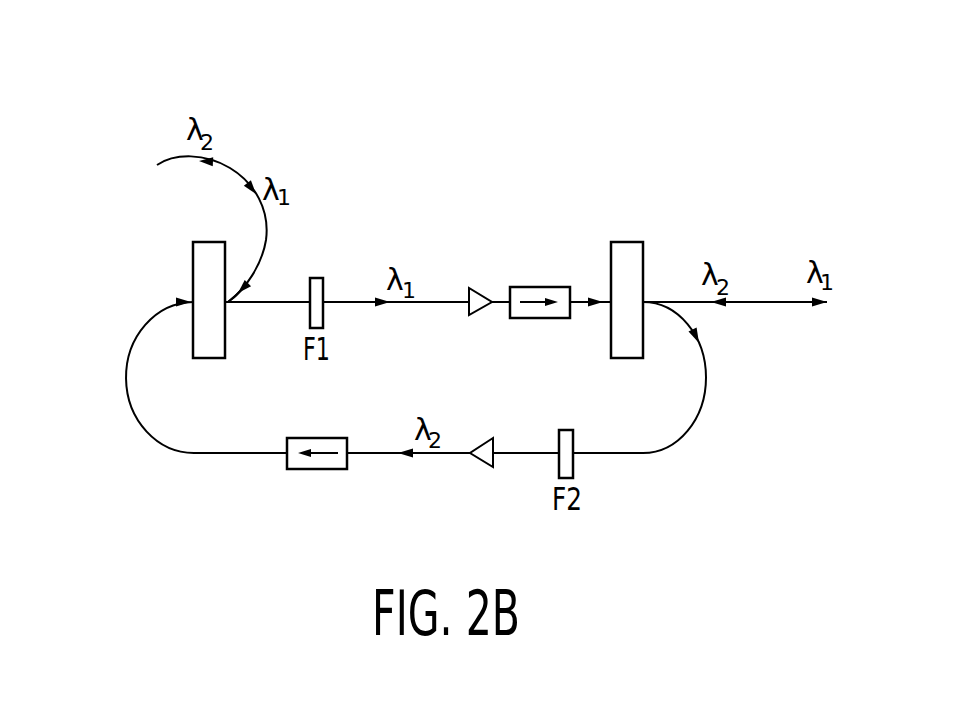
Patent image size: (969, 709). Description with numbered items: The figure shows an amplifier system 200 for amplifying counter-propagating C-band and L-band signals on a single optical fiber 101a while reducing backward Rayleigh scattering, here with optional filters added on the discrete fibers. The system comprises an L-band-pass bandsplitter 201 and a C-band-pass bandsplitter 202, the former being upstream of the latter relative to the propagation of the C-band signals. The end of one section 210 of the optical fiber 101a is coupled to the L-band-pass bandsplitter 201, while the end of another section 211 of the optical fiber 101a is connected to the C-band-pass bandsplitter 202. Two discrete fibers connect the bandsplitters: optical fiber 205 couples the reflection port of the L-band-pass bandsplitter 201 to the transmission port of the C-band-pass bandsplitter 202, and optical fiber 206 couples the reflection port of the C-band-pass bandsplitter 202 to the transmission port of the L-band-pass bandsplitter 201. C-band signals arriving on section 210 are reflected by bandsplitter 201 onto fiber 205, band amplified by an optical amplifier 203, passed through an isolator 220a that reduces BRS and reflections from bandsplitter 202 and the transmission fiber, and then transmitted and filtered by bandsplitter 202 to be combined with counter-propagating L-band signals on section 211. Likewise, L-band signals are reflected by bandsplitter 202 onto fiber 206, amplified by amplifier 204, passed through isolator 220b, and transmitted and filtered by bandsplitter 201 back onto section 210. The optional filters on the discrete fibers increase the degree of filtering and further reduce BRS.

The optical fiber 101a is at (157, 165).
The amplifier system 200 is at (536, 116).
The L-band-pass bandsplitter 201 is at (192, 262).
The C-band-pass bandsplitter 202 is at (628, 242).
The optical amplifier 203 is at (480, 288).
The amplifier 204 is at (490, 438).
The optical fiber 205 is at (347, 302).
The optical fiber 206 is at (363, 452).
The section of optical fiber 210 is at (243, 288).
The section of optical fiber 211 is at (645, 302).
The isolator 220a is at (549, 287).
The isolator 220b is at (318, 472).